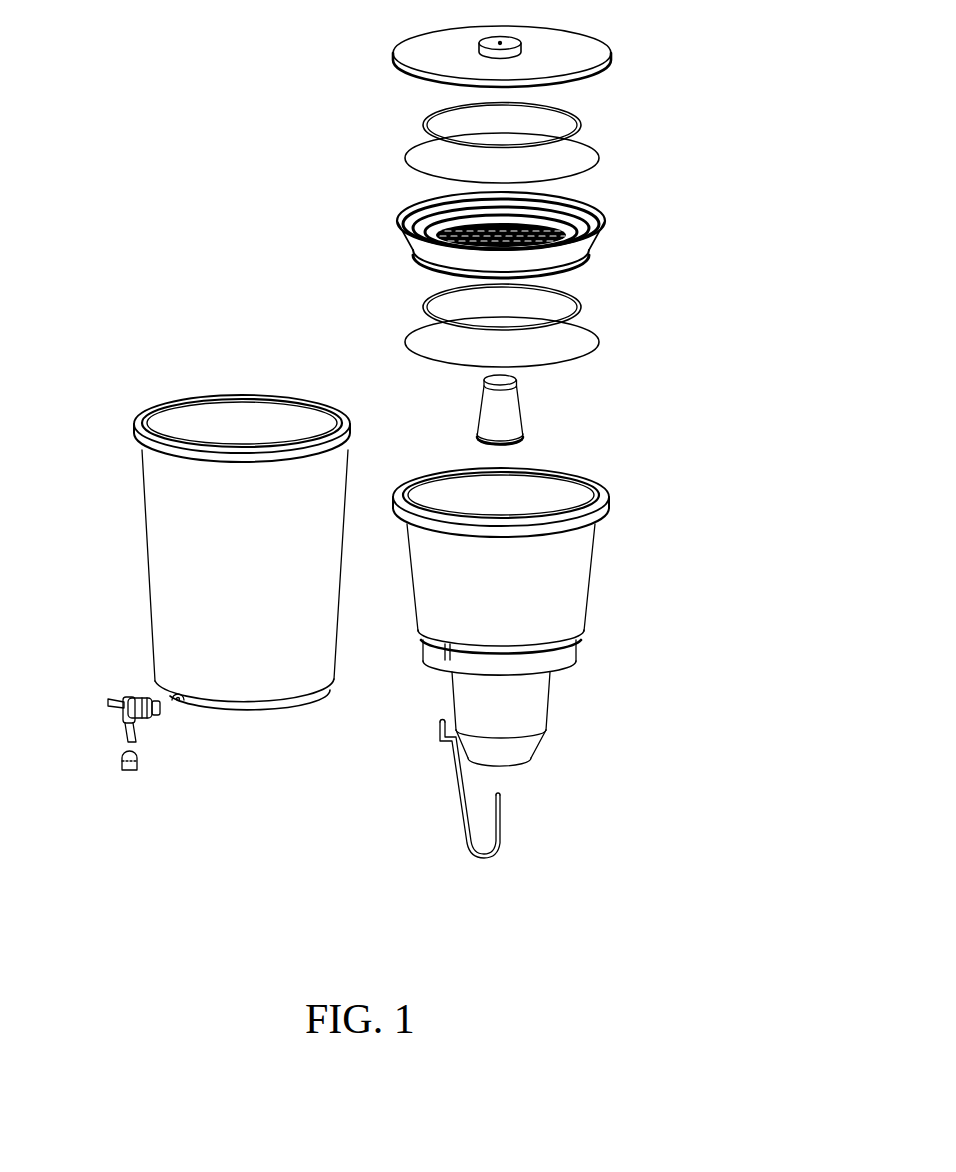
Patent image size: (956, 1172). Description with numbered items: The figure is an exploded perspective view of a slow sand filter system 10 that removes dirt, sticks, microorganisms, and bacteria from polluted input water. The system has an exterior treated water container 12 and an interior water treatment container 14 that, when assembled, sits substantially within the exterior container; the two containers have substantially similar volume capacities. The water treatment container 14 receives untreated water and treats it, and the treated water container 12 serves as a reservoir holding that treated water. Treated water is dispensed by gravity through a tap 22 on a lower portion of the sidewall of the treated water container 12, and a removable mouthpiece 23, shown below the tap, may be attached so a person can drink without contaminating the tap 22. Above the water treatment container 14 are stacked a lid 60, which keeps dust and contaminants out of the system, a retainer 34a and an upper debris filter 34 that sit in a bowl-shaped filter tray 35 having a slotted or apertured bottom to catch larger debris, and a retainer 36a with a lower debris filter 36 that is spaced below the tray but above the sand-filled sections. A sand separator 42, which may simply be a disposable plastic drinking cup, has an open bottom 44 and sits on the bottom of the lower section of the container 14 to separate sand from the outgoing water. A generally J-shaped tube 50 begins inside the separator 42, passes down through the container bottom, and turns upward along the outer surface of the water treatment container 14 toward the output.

The slow sand filter system 10 is at (268, 164).
The exterior treated water container 12 is at (249, 530).
The interior water treatment container 14 is at (519, 588).
The tap 22 is at (122, 714).
The removable mouthpiece 23 is at (139, 761).
The upper debris filter 34 is at (599, 158).
The retainer 34a is at (581, 125).
The filter tray 35 is at (606, 237).
The lower debris filter 36 is at (599, 341).
The retainer 36a is at (581, 307).
The sand separator 42 is at (524, 410).
The open bottom 44 is at (524, 440).
The J-shaped tube 50 is at (505, 820).
The lid 60 is at (559, 62).